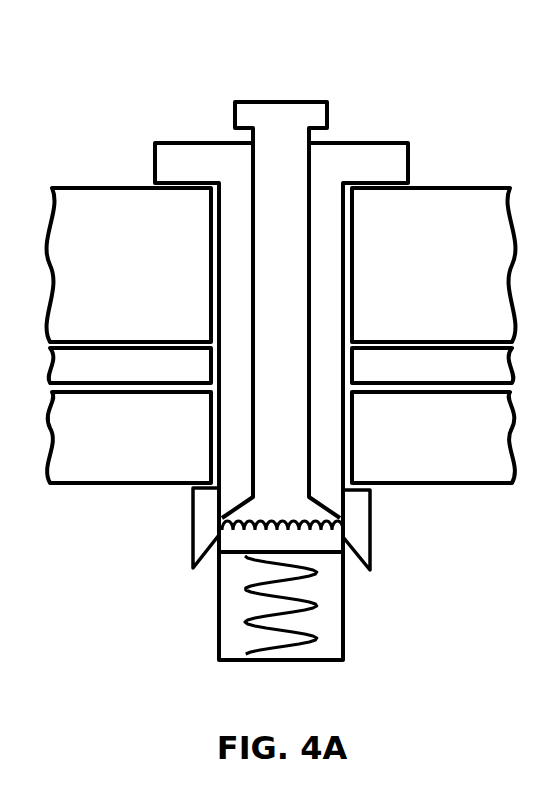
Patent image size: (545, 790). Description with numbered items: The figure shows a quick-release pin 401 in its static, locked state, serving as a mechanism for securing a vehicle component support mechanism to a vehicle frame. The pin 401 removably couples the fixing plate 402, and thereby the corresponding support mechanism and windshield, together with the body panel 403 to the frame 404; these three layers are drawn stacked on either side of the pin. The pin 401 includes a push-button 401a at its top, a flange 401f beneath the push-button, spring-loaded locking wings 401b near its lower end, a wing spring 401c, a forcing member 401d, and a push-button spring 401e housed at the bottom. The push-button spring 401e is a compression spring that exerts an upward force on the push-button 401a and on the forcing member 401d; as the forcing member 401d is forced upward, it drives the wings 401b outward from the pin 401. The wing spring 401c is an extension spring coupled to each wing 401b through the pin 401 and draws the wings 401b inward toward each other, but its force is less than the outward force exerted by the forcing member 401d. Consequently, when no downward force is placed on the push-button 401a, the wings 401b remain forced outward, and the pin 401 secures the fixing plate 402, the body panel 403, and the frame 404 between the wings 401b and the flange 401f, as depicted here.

The quick-release pin 401 is at (145, 78).
The push-button 401a is at (297, 101).
The spring-loaded locking wings 401b is at (192, 548).
The wing spring 401c is at (335, 533).
The forcing member 401d is at (325, 556).
The push-button spring 401e is at (247, 588).
The flange 401f is at (361, 143).
The fixing plate 402 is at (155, 274).
The body panel 403 is at (155, 378).
The frame 404 is at (155, 453).